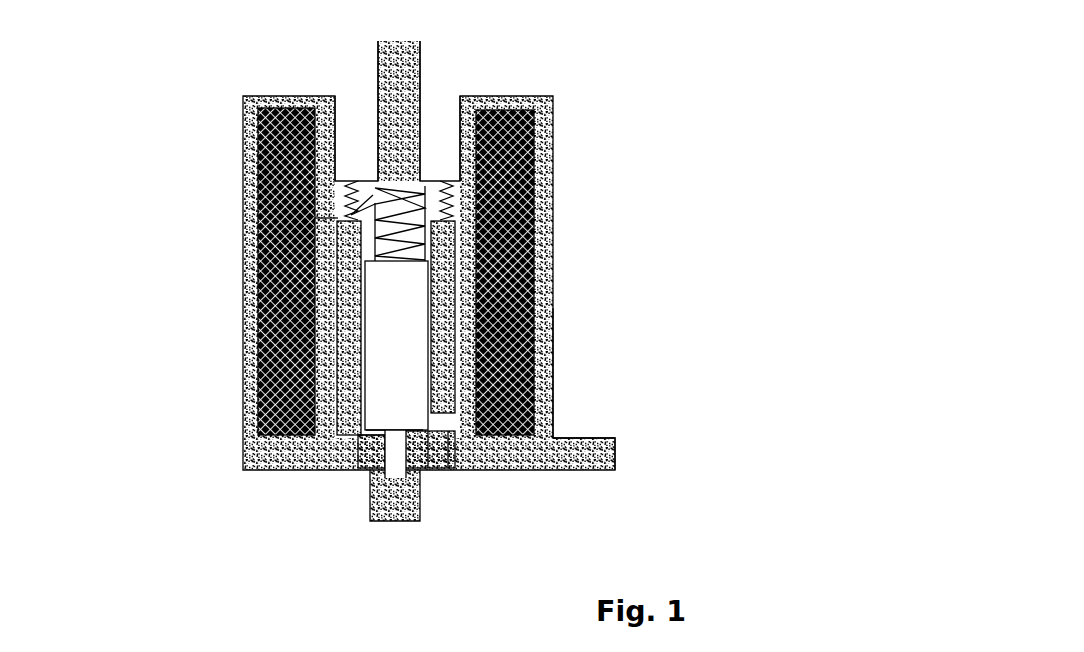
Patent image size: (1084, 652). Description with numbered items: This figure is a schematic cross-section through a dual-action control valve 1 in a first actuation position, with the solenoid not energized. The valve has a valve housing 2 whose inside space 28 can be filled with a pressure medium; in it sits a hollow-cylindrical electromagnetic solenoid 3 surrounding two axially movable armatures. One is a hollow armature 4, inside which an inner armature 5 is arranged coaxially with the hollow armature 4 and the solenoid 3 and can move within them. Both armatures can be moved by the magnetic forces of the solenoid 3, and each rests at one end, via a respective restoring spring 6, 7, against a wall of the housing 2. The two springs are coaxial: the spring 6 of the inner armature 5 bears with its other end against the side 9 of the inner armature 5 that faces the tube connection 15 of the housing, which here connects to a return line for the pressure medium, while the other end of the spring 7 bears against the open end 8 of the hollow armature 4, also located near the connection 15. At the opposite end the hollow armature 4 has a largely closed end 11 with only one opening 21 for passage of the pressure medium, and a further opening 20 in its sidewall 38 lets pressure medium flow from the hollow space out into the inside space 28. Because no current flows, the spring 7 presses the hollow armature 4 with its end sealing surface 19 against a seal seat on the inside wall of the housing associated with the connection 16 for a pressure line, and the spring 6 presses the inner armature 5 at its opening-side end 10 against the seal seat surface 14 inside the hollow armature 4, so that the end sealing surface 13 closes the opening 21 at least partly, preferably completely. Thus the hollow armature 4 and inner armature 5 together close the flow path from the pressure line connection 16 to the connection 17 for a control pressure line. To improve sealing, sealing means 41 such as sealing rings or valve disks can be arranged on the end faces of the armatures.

The dual-action control valve 1 is at (664, 144).
The valve housing 2 is at (543, 127).
The electromagnetic solenoid 3 is at (252, 130).
The hollow armature 4 is at (337, 270).
The inner armature 5 is at (360, 358).
The restoring spring 6 is at (330, 211).
The restoring spring 7 is at (462, 203).
The open end of the hollow armature 8 is at (447, 218).
The end of the inner armature on the spring side 9 is at (397, 262).
The end of the inner armature on the opening side 10 is at (373, 408).
The closed end of the hollow armature 11 is at (345, 438).
The sealing surface on the inner armature 13 is at (415, 432).
The seal seat surface on the hollow armature 14 is at (378, 413).
The connection for a return line 15 is at (412, 100).
The connection for a pressure line 16 is at (413, 500).
The connection for a control pressure line 17 is at (568, 430).
The sealing surface on the outside of the hollow armature 19 is at (400, 465).
The opening 20 is at (505, 400).
The opening 21 is at (427, 467).
The inside space of the dual-action control valve 28 is at (457, 333).
The sidewall of the hollow armature 38 is at (250, 297).
The sealing means 41 is at (417, 425).